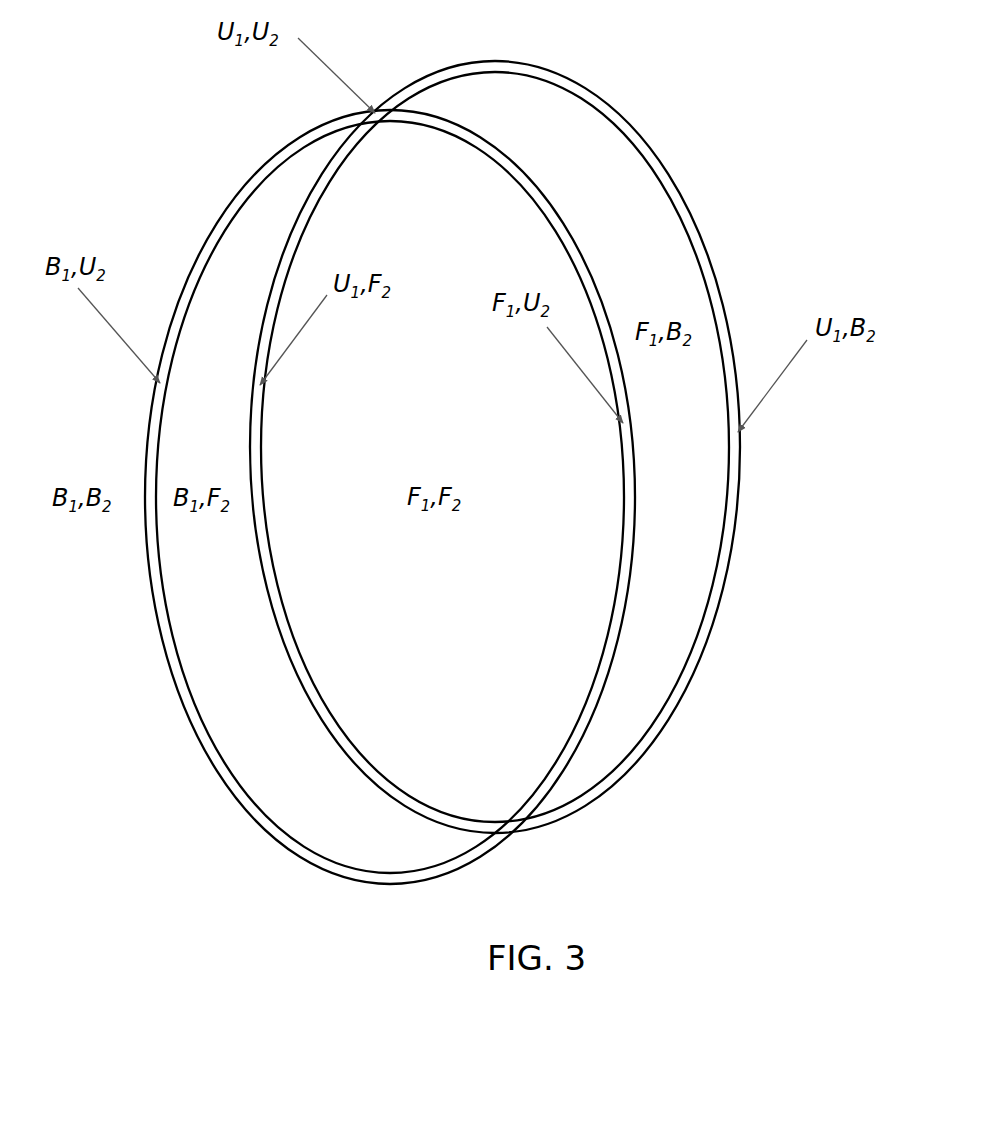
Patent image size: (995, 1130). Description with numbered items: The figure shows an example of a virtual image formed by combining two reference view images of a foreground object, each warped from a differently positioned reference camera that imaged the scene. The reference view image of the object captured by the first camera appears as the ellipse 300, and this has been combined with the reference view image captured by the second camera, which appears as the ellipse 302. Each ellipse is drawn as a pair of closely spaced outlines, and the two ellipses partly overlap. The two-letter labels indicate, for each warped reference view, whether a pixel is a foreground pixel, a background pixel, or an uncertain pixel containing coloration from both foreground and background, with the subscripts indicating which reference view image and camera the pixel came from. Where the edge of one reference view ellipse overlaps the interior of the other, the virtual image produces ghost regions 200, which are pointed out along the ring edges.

The ellipse 300 is at (634, 99).
The ellipse 302 is at (226, 168).
The ghost regions 200 is at (262, 540).